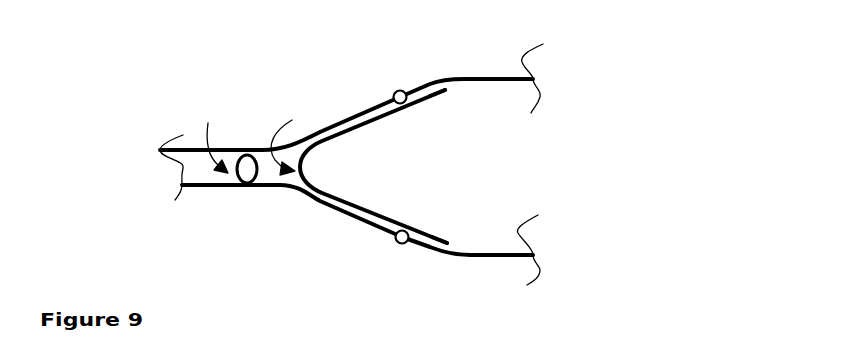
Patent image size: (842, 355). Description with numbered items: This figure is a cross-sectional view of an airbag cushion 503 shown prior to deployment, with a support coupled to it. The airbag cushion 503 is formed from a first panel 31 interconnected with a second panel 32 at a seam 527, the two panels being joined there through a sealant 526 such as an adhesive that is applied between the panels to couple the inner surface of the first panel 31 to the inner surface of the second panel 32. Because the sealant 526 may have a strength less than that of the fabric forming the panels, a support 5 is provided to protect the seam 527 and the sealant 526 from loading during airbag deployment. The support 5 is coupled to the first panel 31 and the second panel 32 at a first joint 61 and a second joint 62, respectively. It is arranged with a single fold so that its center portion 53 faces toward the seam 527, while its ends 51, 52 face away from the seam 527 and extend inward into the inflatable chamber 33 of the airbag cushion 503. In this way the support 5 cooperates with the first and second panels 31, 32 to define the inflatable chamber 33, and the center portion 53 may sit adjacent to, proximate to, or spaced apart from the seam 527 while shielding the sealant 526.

The airbag cushion 503 is at (290, 166).
The seam 527 is at (216, 136).
The center portion 53 is at (298, 135).
The sealant 526 is at (243, 181).
The second panel 32 is at (280, 188).
The support 5 is at (333, 138).
The inflatable chamber 33 is at (449, 176).
The first panel 31 is at (485, 78).
The first end 51 is at (433, 94).
The second end 52 is at (433, 240).
The first joint 61 is at (397, 90).
The second joint 62 is at (402, 246).